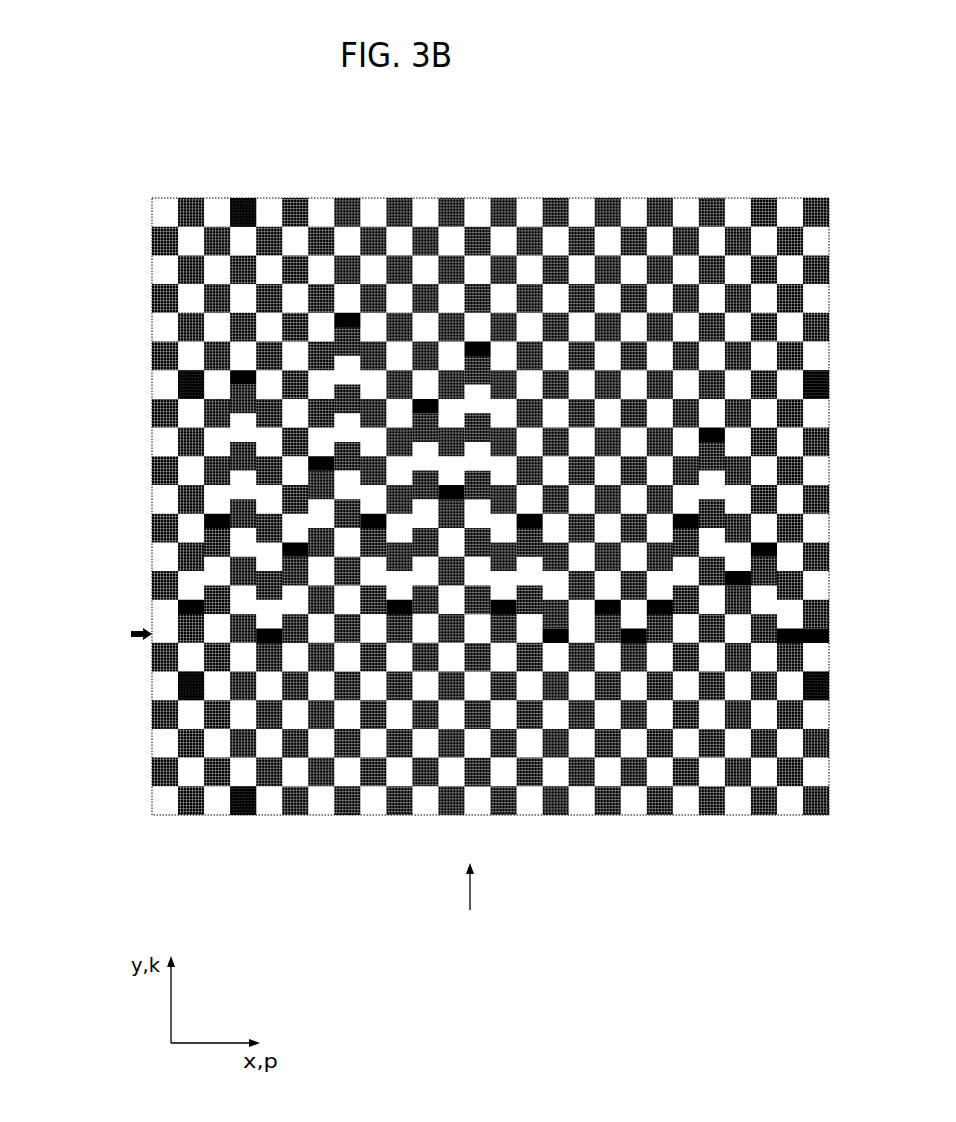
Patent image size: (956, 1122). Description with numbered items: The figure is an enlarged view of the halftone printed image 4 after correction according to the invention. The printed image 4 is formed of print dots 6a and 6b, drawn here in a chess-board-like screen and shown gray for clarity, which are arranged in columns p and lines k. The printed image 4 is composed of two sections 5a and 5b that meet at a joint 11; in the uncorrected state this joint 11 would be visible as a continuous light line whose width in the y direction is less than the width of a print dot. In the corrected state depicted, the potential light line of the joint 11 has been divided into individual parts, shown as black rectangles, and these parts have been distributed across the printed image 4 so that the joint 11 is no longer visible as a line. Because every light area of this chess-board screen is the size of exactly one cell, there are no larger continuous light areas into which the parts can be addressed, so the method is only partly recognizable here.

The printed image 4 is at (470, 904).
The first section 5a is at (125, 385).
The second section 5b is at (125, 686).
The print dot 6a is at (241, 197).
The print dot 6b is at (243, 817).
The joint 11 is at (104, 634).